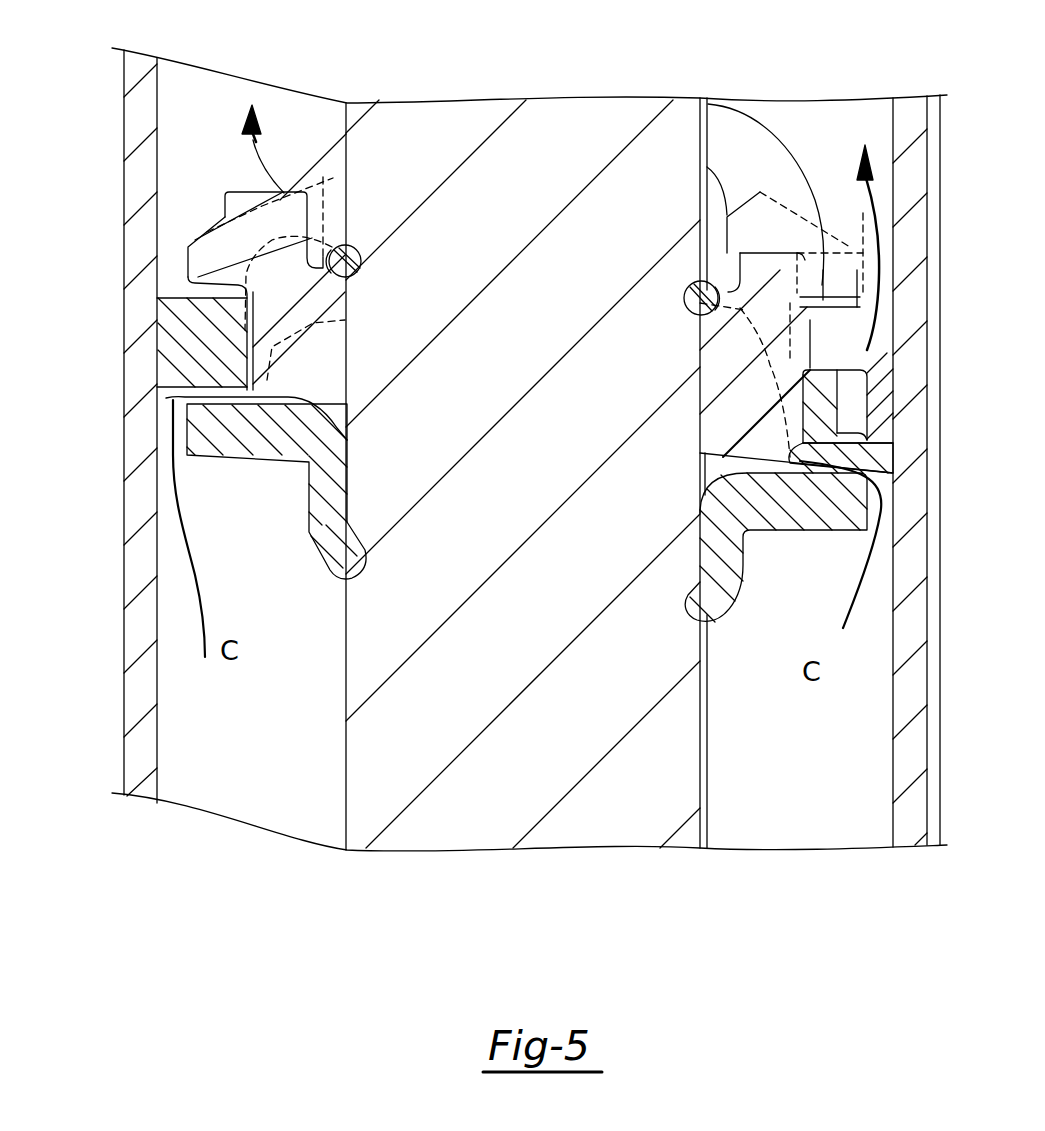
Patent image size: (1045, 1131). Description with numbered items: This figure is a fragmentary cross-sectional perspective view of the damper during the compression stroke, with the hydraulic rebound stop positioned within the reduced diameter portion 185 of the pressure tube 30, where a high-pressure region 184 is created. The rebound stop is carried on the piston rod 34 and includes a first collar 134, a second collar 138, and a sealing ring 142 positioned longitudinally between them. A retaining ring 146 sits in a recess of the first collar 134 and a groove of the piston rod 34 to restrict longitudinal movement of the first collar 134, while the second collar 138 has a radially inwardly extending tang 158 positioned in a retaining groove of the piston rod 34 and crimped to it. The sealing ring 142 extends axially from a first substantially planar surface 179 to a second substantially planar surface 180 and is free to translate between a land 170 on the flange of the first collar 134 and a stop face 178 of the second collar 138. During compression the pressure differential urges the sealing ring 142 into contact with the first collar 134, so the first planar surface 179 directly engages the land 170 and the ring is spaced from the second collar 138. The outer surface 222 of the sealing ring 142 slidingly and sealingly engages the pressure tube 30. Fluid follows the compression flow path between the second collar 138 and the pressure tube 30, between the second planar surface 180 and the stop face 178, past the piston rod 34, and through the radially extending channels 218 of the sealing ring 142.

The pressure tube 30 is at (137, 505).
The piston rod 34 is at (433, 133).
The first collar 134 is at (235, 200).
The second collar 138 is at (254, 447).
The sealing ring 142 is at (165, 312).
The retaining ring 146 is at (693, 300).
The tang 158 is at (693, 605).
The land 170 is at (197, 242).
The stop face 178 is at (345, 422).
The first substantially planar surface 179 is at (177, 288).
The second substantially planar surface 180 is at (166, 398).
The high-pressure region 184 is at (205, 121).
The reduced diameter portion 185 is at (137, 633).
The channels 218 is at (352, 256).
The outer surface 222 is at (157, 342).